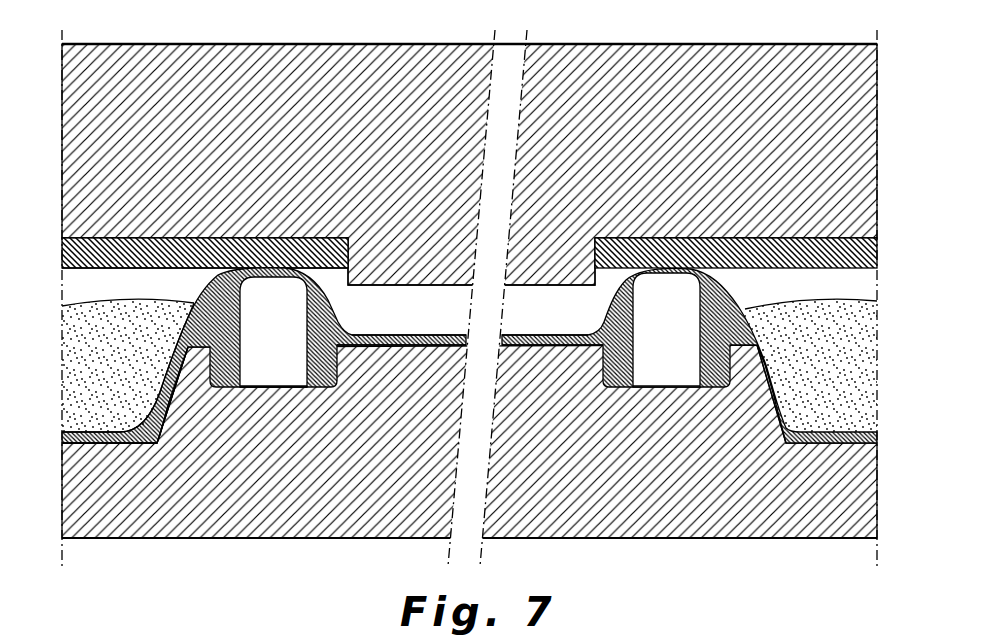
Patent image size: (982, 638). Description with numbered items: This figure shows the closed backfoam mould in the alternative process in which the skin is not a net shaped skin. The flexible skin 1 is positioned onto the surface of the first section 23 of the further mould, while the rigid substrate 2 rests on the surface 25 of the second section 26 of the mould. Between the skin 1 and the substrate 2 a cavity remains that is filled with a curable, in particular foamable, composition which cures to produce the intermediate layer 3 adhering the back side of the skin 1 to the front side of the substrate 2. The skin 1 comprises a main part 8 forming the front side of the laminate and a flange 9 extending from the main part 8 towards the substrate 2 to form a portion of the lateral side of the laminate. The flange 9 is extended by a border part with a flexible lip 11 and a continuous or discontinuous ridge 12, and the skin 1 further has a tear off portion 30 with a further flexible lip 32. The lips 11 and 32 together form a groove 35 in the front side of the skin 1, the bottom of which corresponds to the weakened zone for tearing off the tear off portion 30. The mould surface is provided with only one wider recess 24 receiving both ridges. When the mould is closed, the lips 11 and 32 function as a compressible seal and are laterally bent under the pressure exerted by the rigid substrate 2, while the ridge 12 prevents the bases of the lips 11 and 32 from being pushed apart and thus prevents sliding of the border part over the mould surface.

The flexible skin 1 is at (63, 433).
The rigid substrate 2 is at (103, 258).
The intermediate layer 3 is at (92, 349).
The main part 8 is at (87, 443).
The flange 9 is at (150, 393).
The flexible lip 11 is at (242, 285).
The ridge 12 is at (203, 298).
The first section of the further mould 23 is at (325, 527).
The recess 24 is at (347, 330).
The surface of the second mould section 25 is at (167, 238).
The second section of the further mould 26 is at (317, 67).
The tear off portion 30 is at (521, 333).
The further flexible lip 32 is at (297, 283).
The groove 35 is at (277, 365).